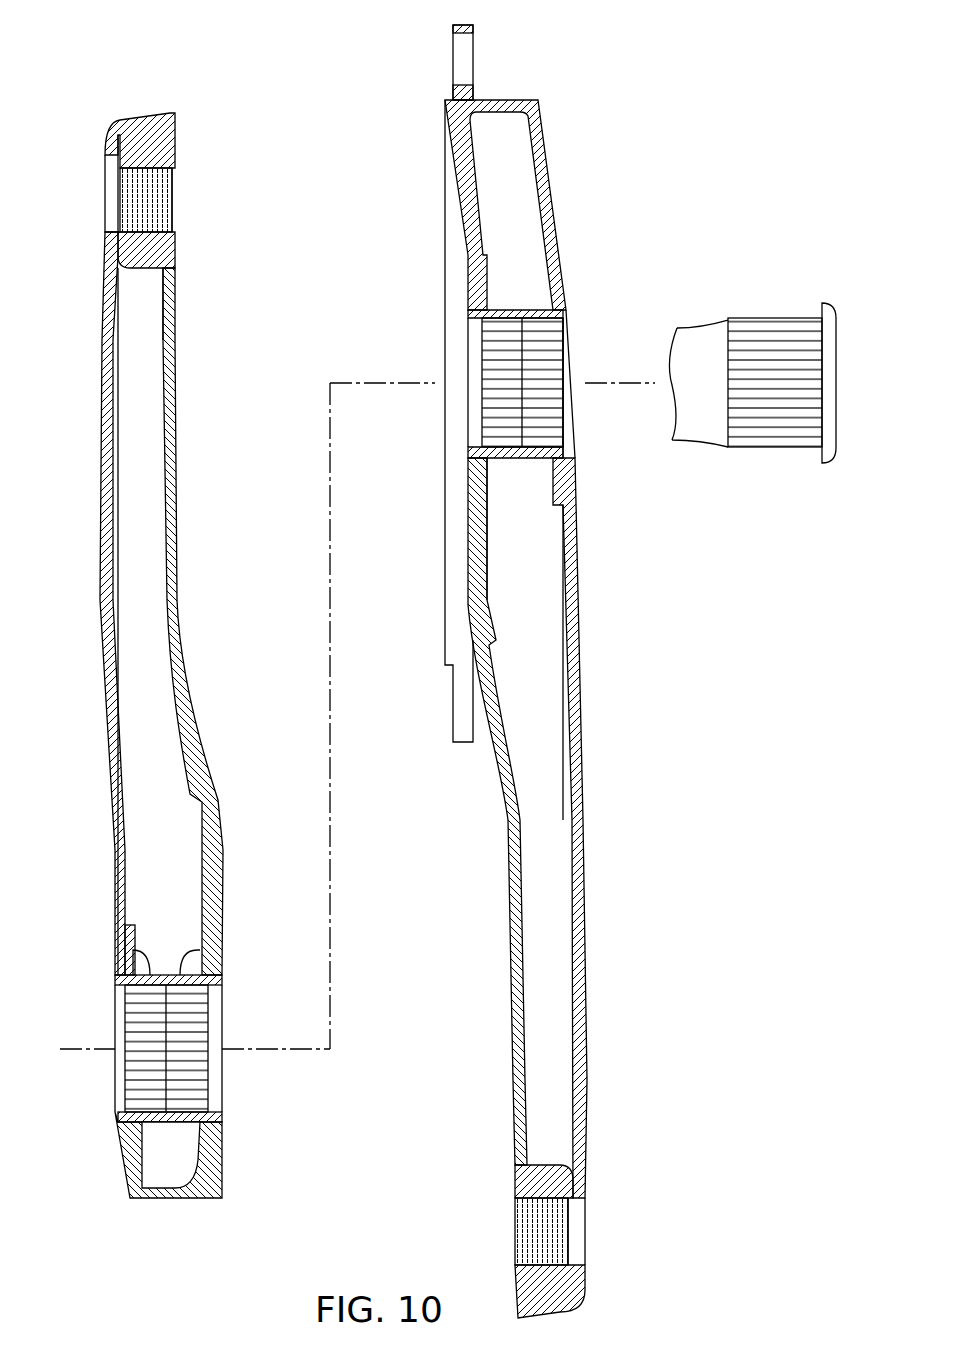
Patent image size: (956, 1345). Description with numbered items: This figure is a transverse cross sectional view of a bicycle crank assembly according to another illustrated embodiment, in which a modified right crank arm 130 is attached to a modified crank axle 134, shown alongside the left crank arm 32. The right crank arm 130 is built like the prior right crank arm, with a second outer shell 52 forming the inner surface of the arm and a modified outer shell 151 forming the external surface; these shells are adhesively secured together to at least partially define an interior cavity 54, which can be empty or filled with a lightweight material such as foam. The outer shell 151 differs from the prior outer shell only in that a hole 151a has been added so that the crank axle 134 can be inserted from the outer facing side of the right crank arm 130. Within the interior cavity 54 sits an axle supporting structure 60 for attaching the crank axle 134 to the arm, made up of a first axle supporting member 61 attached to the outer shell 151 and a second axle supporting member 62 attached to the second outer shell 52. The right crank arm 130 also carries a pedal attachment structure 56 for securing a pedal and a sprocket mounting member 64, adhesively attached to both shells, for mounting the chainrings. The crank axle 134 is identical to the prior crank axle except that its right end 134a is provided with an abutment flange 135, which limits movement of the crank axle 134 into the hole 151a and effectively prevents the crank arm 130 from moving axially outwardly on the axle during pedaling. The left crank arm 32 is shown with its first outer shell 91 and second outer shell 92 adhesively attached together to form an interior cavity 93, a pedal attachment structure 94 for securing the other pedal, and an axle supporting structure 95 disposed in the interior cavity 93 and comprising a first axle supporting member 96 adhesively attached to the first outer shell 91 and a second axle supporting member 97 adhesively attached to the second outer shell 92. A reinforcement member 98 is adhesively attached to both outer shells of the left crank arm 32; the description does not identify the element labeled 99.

The left crank arm 32 is at (220, 212).
The second outer shell 52 is at (512, 920).
The interior cavity 54 is at (548, 857).
The pedal attachment structure 56 is at (545, 1165).
The axle supporting structure 60 is at (527, 480).
The first axle supporting member 61 is at (530, 308).
The second axle supporting member 62 is at (497, 308).
The sprocket mounting member 64 is at (474, 165).
The first outer shell 91 is at (98, 575).
The second outer shell 92 is at (180, 472).
The interior cavity 93 is at (143, 632).
The pedal attachment structure 94 is at (143, 282).
The axle supporting structure 95 is at (157, 948).
The first axle supporting member 96 is at (132, 950).
The second axle supporting member 97 is at (197, 950).
The reinforcement member 98 is at (238, 1188).
The threaded section 99 is at (125, 240).
The right crank arm 130 is at (673, 158).
The crank axle 134 is at (690, 308).
The right end 134a is at (772, 318).
The abutment flange 135 is at (832, 303).
The outer shell 151 is at (588, 770).
The hole 151a is at (566, 447).